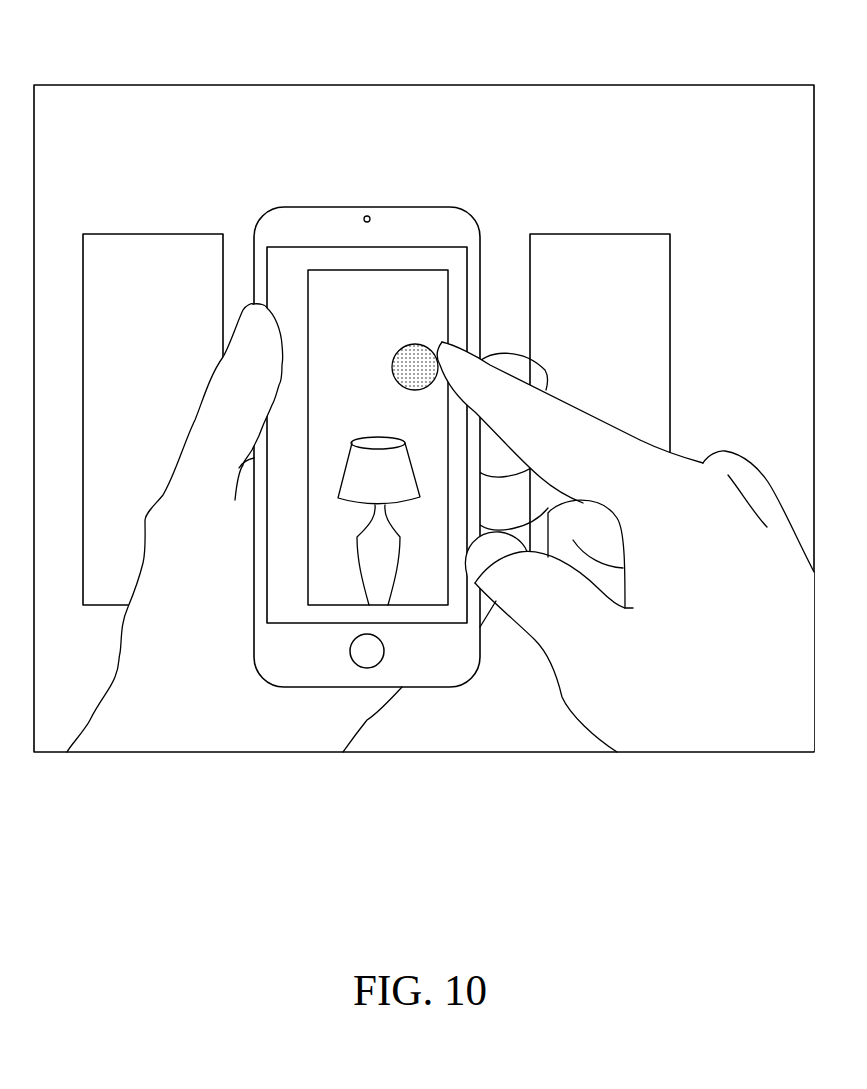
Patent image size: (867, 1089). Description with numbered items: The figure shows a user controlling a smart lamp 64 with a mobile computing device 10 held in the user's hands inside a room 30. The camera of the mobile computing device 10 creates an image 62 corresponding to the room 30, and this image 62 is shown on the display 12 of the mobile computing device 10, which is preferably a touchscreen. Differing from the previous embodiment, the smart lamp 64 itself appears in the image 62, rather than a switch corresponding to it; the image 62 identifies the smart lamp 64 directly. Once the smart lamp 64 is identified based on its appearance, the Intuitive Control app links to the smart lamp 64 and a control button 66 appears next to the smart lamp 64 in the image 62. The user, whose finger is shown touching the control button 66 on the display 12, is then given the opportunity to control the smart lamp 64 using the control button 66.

The room 30 is at (553, 112).
The mobile computing device 10 is at (336, 441).
The display 12 is at (422, 638).
The image 62 is at (338, 258).
The smart lamp 64 is at (382, 558).
The control button 66 is at (420, 356).